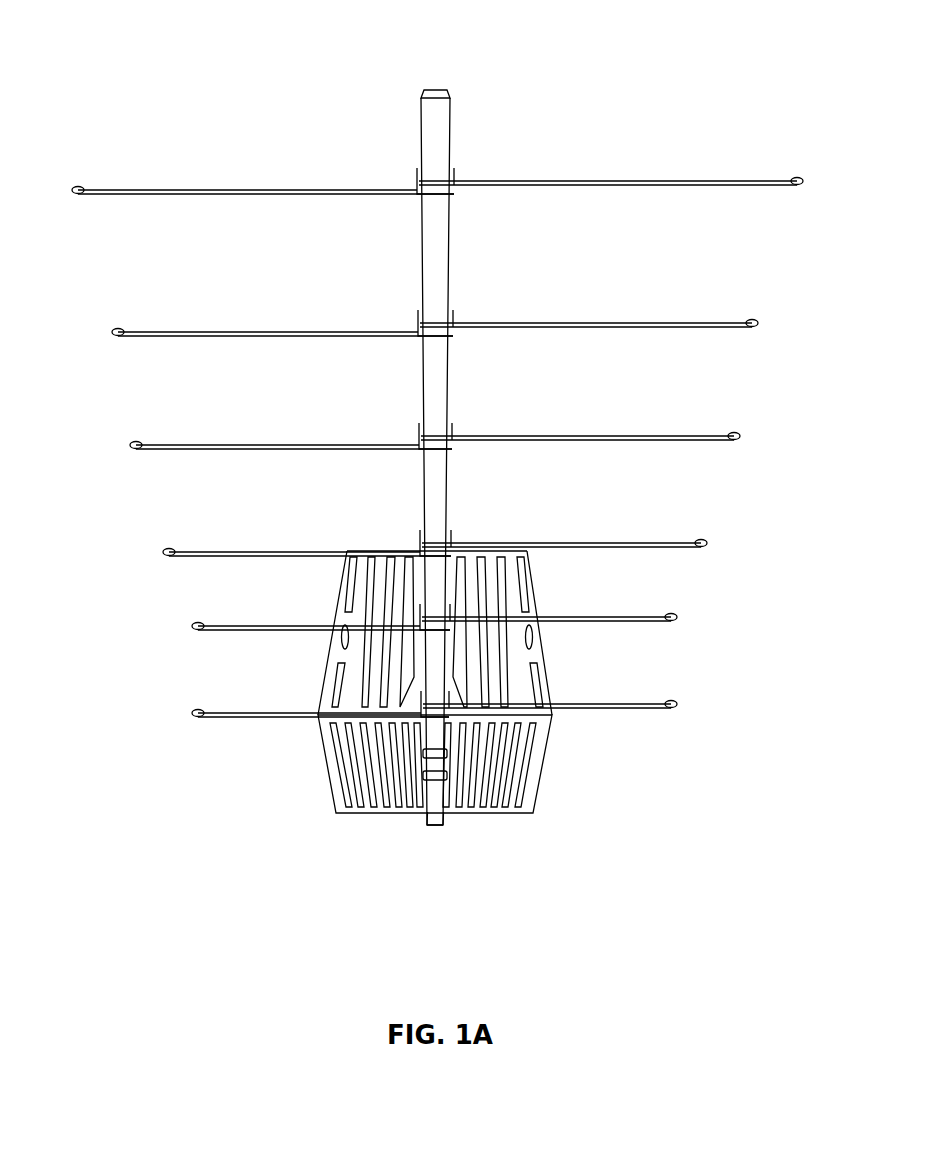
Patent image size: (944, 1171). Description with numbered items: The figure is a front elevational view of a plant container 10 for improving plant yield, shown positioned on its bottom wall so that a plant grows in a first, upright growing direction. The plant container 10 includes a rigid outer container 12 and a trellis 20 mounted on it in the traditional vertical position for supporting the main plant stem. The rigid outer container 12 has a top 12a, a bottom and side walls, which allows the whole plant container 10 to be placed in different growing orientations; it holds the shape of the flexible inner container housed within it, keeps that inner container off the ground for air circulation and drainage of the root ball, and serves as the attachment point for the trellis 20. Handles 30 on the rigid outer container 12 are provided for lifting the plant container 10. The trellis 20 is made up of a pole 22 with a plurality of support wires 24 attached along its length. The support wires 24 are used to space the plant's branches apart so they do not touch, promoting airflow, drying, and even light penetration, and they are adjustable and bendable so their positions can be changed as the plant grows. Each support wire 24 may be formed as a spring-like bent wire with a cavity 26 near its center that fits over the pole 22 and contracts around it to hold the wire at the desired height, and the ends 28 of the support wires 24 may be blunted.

The plant container 10 is at (553, 65).
The rigid outer container 12 is at (520, 792).
The top 12a is at (530, 673).
The trellis 20 is at (748, 380).
The pole 22 is at (433, 818).
The support wires 24 is at (168, 445).
The cavity 26 is at (455, 318).
The ends 28 is at (80, 188).
The handles 30 is at (413, 745).